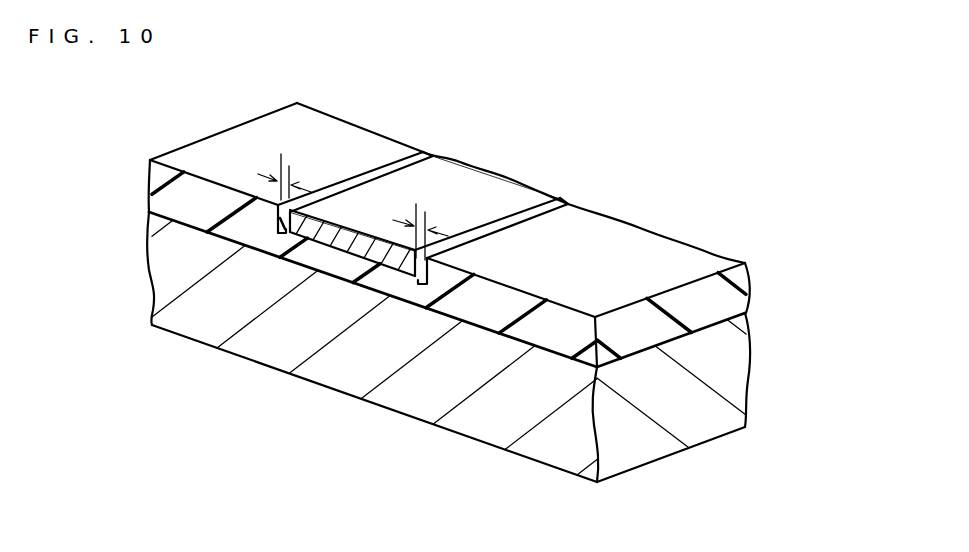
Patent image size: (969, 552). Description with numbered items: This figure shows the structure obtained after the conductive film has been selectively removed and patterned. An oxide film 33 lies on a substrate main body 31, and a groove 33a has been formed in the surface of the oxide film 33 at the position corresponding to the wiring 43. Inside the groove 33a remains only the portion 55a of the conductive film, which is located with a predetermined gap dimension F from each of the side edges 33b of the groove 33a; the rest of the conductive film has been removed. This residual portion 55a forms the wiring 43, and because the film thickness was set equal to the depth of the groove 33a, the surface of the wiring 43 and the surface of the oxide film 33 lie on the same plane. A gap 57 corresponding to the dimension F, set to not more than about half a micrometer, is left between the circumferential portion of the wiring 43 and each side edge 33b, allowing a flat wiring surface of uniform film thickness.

The substrate main body 31 is at (149, 277).
The oxide film 33 is at (150, 184).
The groove 33a is at (357, 228).
The side edge of the groove 33b is at (281, 220).
The wiring 43 is at (478, 186).
The portion of the conductive film 55a is at (512, 196).
The gap 57 is at (421, 153).